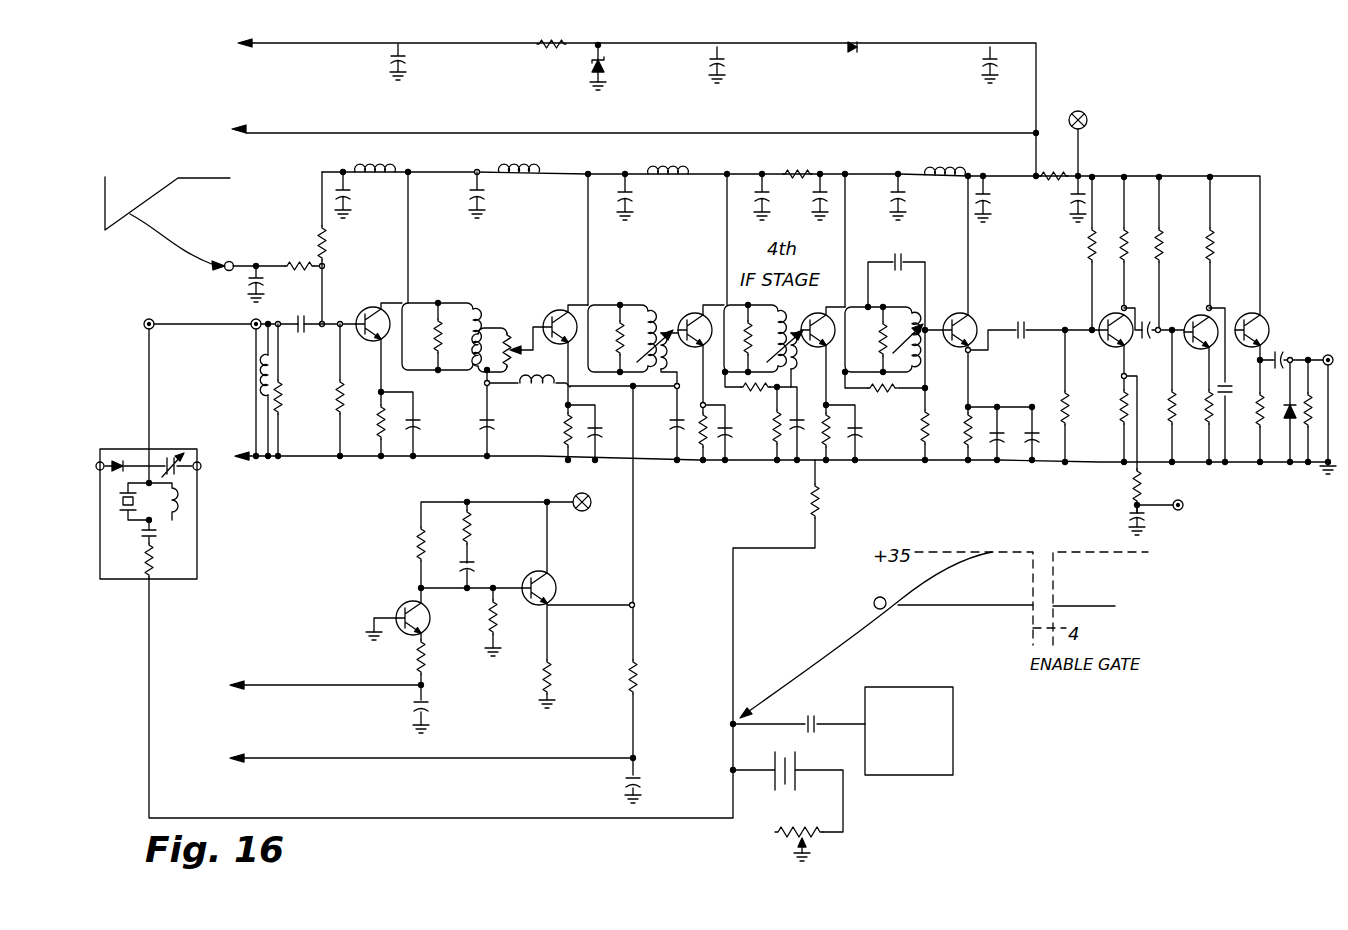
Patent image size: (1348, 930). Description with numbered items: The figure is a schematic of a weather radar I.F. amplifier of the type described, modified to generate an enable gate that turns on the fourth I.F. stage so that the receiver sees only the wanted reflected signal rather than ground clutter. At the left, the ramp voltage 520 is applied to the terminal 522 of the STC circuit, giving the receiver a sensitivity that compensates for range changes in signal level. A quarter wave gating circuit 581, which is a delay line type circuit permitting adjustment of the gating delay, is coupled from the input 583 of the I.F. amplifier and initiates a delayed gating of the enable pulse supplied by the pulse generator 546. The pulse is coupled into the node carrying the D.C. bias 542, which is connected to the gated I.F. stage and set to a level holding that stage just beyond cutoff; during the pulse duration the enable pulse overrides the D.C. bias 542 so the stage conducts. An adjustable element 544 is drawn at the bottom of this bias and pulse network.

The ramp voltage 520 is at (150, 202).
The terminal of the STC circuit 522 is at (229, 262).
The input of the I.F. amplifier 583 is at (150, 319).
The quarter wave gating circuit 581 is at (199, 542).
The D.C. bias 542 is at (730, 772).
The potentiometer 544 is at (822, 845).
The pulse generator 546 is at (953, 778).